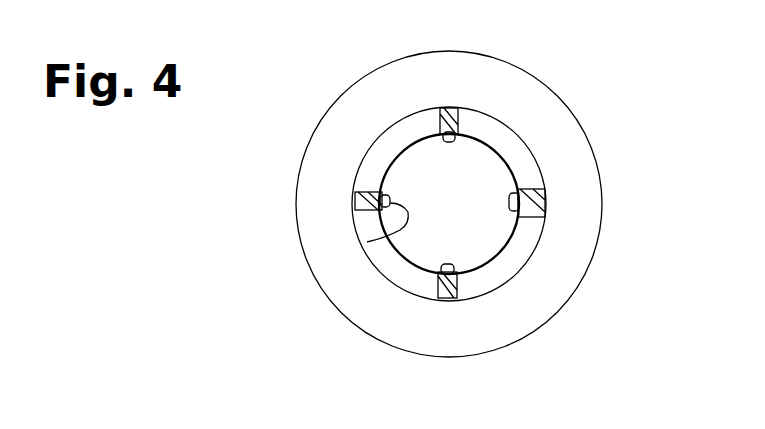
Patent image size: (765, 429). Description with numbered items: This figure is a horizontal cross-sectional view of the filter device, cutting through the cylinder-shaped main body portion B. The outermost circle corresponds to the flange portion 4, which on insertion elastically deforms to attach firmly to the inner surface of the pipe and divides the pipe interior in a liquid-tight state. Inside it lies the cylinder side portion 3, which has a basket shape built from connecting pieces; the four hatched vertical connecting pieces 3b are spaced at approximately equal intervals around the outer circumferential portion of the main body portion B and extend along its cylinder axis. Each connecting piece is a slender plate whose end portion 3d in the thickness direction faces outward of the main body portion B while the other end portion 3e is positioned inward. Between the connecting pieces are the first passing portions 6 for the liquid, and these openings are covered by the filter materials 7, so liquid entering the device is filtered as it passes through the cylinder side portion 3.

The cylinder side portion 3 is at (490, 141).
The vertical connecting piece 3b is at (357, 200).
The end portion of the connecting piece facing outward 3d is at (355, 202).
The end portion of the connecting piece positioned inward 3e is at (367, 242).
The flange portion 4 is at (601, 171).
The first passing portion 6 is at (507, 247).
The filter material 7 is at (398, 256).
The main body portion B is at (485, 203).